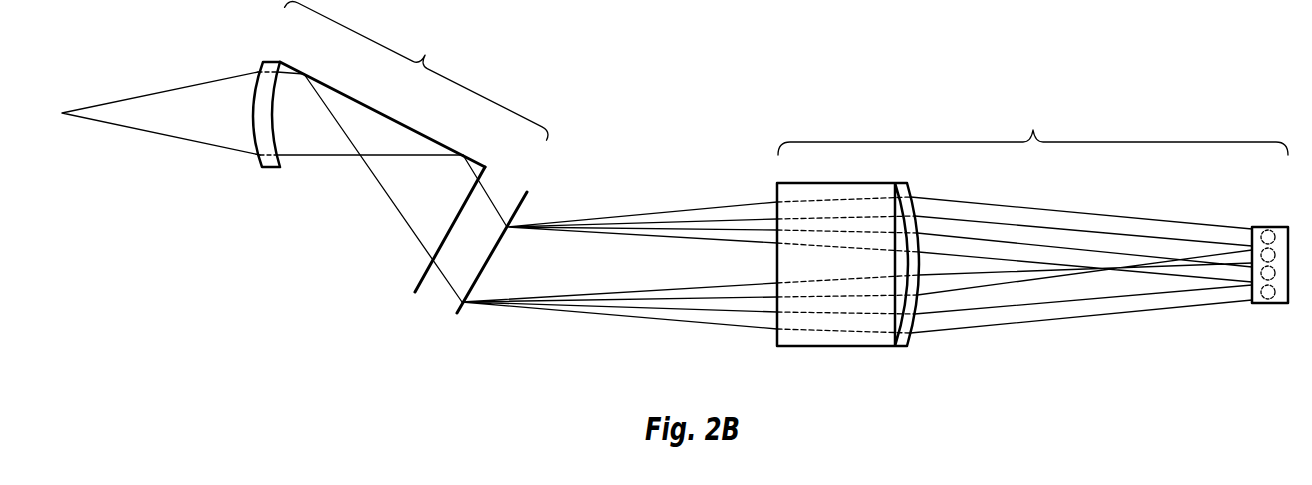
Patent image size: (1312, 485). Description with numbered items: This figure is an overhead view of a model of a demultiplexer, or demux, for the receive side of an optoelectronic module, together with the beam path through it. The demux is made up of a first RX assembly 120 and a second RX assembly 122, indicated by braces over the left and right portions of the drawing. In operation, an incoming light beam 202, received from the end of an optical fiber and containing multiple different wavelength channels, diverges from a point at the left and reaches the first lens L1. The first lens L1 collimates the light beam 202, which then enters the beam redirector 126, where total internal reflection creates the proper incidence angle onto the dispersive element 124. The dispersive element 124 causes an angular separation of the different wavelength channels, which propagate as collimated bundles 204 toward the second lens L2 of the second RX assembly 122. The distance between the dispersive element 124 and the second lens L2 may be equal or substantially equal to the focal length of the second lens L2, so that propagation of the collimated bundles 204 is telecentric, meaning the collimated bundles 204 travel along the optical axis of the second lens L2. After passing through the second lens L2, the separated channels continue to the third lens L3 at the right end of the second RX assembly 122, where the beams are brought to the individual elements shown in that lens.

The incoming light beam 202 is at (163, 92).
The first lens L1 is at (273, 60).
The first RX assembly 120 is at (420, 146).
The beam redirector 126 is at (347, 97).
The dispersive element 124 is at (522, 194).
The collimated bundles 204 is at (627, 198).
The second lens L2 is at (842, 183).
The second RX assembly 122 is at (1033, 218).
The third lens L3 is at (1268, 227).